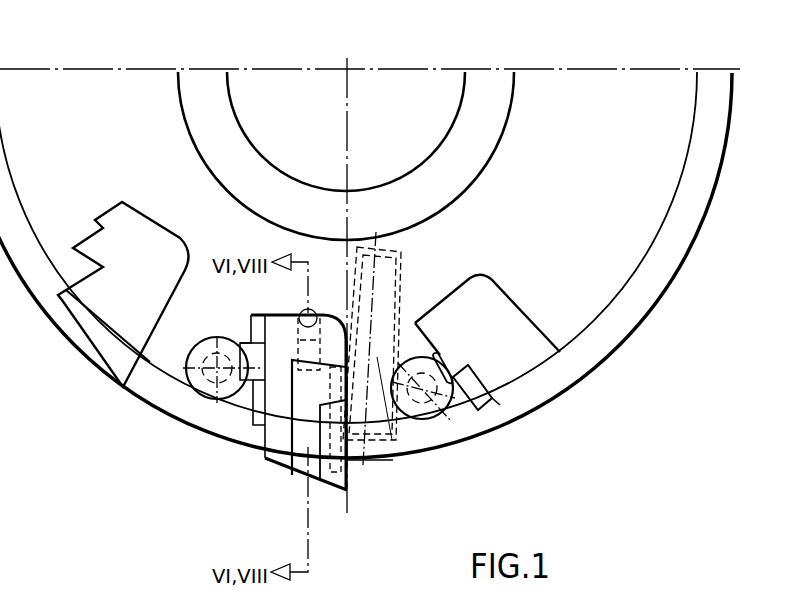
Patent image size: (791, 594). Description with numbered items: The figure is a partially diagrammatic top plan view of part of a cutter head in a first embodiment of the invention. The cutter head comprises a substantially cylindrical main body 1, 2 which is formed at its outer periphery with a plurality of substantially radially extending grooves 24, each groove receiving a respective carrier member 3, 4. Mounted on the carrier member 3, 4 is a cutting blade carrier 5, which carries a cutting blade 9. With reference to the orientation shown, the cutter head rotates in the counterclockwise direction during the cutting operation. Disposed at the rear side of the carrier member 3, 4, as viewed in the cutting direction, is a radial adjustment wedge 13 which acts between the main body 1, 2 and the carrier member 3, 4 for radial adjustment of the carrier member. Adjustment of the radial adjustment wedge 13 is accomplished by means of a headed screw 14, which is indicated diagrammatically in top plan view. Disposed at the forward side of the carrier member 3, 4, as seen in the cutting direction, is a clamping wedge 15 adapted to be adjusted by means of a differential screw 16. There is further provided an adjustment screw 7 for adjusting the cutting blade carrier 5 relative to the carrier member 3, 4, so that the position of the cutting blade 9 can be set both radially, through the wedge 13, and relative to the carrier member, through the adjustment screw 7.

The main body 1 is at (366, 234).
The main body 2 is at (83, 113).
The carrier member 3 is at (314, 175).
The carrier member 4 is at (272, 338).
The cutting blade carrier 5 is at (303, 448).
The adjustment screw 7 is at (348, 336).
The cutting blade 9 is at (338, 452).
The radial adjustment wedge 13 is at (248, 413).
The headed screw 14 is at (183, 370).
The clamping wedge 15 is at (377, 357).
The differential screw 16 is at (388, 280).
The groove 24 is at (127, 287).